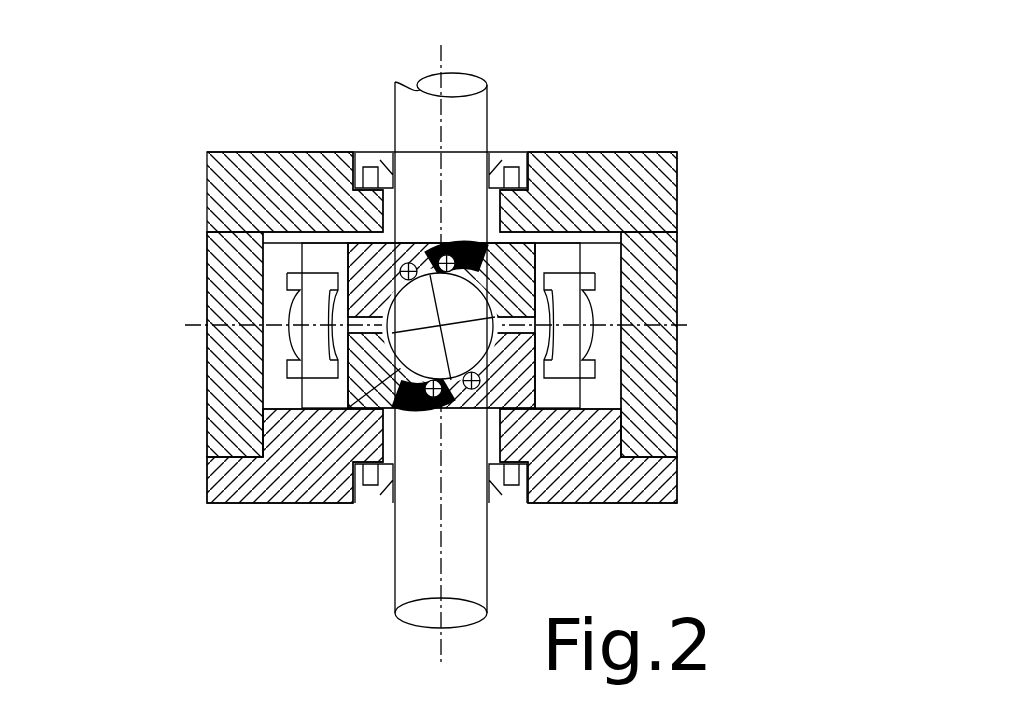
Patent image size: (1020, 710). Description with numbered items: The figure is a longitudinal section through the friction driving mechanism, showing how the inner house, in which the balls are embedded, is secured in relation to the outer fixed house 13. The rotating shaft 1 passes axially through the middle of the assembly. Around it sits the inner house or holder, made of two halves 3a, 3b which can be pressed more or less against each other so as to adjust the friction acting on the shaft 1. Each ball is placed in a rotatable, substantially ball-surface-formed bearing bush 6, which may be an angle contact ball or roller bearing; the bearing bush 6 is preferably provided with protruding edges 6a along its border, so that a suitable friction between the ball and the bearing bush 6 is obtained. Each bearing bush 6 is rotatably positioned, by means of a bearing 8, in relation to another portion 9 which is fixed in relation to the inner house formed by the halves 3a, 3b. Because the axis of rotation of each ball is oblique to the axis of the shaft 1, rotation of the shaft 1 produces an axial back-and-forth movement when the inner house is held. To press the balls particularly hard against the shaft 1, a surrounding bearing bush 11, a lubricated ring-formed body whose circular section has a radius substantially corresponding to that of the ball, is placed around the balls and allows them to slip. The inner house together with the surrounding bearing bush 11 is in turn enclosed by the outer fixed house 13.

The shaft 1 is at (473, 108).
The first half of the inner house 3a is at (240, 198).
The second half of the inner house 3b is at (393, 343).
The bearing bush 6 is at (500, 275).
The protruding edges 6a is at (395, 380).
The bearing 8 is at (465, 268).
The portion 9 is at (400, 262).
The surrounding bearing bush 11 is at (293, 305).
The outer fixed house 13 is at (657, 268).